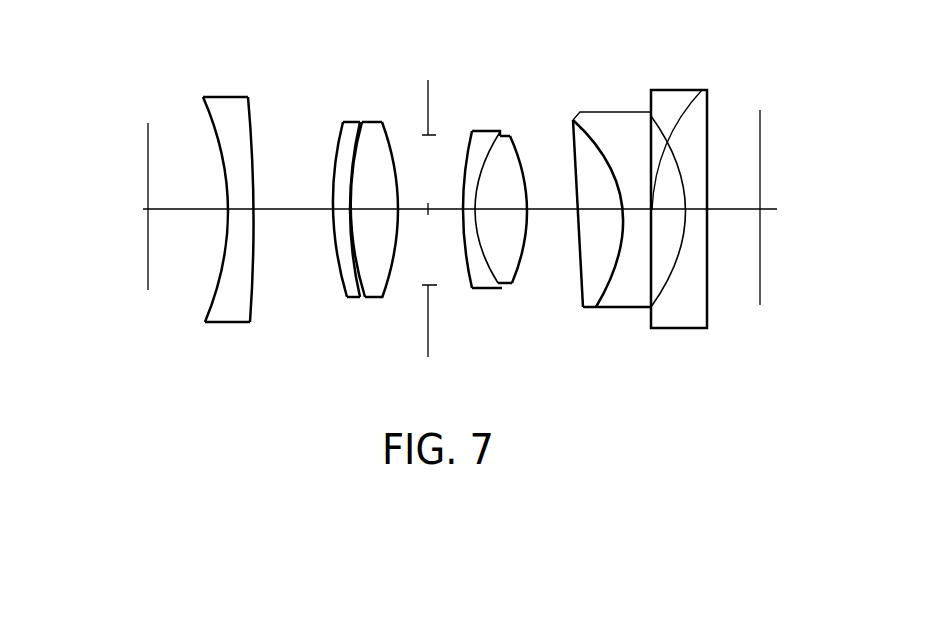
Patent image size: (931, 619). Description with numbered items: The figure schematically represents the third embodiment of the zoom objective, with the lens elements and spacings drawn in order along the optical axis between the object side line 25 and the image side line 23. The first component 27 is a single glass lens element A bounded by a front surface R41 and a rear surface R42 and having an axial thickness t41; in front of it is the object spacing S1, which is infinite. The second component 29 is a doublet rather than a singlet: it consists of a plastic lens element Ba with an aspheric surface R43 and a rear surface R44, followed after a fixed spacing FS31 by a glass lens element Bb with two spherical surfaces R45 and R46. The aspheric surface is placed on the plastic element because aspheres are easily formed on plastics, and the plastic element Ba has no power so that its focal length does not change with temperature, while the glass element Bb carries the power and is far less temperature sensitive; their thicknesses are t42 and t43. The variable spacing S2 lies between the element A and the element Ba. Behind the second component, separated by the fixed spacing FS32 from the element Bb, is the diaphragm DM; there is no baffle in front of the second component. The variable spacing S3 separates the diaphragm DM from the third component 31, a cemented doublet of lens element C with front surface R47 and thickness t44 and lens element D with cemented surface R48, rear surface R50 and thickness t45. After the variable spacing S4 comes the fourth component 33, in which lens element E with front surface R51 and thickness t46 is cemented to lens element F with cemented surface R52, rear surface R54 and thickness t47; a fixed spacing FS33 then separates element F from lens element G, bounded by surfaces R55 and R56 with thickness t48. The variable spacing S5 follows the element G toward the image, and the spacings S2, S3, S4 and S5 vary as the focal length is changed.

The object plane 25 is at (147, 140).
The image plane 23 is at (760, 138).
The first component 27 is at (197, 58).
The second component 29 is at (325, 58).
The third component 31 is at (460, 72).
The fourth component 33 is at (568, 60).
The lens element A is at (218, 218).
The plastic lens element Ba is at (327, 208).
The glass lens element Bb is at (382, 216).
The lens element C is at (473, 205).
The lens element D is at (525, 225).
The diaphragm DM is at (428, 333).
The lens element E is at (580, 194).
The lens element F is at (624, 209).
The lens element G is at (705, 222).
The front surface radius of lens element A'' R41 is at (217, 128).
The rear surface radius of lens element A'' R42 is at (252, 127).
The aspheric surface R43 is at (338, 163).
The rear surface radius of lens element Ba'' R44 is at (347, 123).
The front spherical surface of lens element Bb'' R45 is at (367, 123).
The rear spherical surface of lens element Bb'' R46 is at (384, 131).
The front surface radius of lens element C'' R47 is at (467, 160).
The cemented surface radius between C'' and D'' R48 is at (485, 150).
The rear surface radius of lens element D'' R50 is at (520, 157).
The front surface radius of lens element E'' R51 is at (578, 150).
The cemented surface radius between E'' and F'' R52 is at (600, 130).
The rear surface radius of lens element F'' R54 is at (651, 153).
The front surface radius of lens element G'' R55 is at (698, 90).
The rear surface radius of lens element G'' R56 is at (705, 147).
The axial thickness of lens element A'' t41 is at (238, 212).
The axial thickness of lens element Ba'' t42 is at (346, 206).
The axial thickness of lens element Bb'' t43 is at (389, 252).
The axial thickness of lens element C'' t44 is at (469, 208).
The axial thickness of lens element D'' t45 is at (497, 208).
The axial thickness of lens element E'' t46 is at (607, 209).
The axial thickness of lens element F'' t47 is at (643, 208).
The axial thickness of lens element G'' t48 is at (697, 205).
The object spacing S1 is at (178, 208).
The variable spacing S2 is at (268, 208).
The variable spacing S3 is at (446, 210).
The variable spacing S4 is at (538, 212).
The variable spacing S5 is at (728, 210).
The fixed spacing FS31 is at (348, 210).
The fixed spacing FS32 is at (403, 207).
The fixed spacing FS33 is at (671, 212).